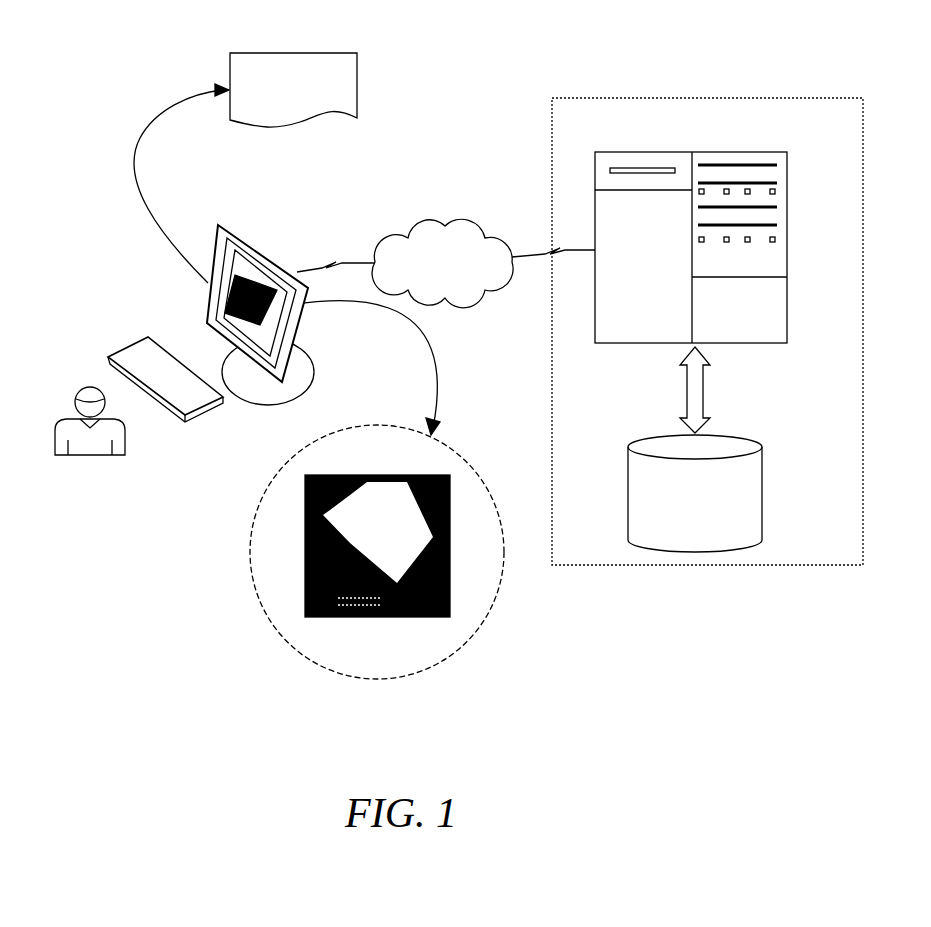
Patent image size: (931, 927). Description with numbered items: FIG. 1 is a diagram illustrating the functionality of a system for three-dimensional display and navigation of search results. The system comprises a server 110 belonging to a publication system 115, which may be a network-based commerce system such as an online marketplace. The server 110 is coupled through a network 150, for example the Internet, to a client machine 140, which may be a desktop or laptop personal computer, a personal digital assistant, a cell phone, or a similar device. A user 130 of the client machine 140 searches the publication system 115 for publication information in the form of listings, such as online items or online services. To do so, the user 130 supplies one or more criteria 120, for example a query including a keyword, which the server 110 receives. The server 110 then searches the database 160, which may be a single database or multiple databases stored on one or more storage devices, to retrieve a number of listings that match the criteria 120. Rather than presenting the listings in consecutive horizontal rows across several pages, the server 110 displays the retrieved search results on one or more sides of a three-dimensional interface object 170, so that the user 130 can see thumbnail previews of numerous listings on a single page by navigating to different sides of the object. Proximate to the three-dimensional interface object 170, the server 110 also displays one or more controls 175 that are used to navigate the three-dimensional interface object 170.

The server 110 is at (762, 152).
The publication system 115 is at (705, 98).
The criteria 120 is at (293, 53).
The user 130 is at (93, 386).
The client machine 140 is at (277, 250).
The network 150 is at (445, 223).
The database 160 is at (762, 490).
The 3-D interface object 170 is at (368, 482).
The controls 175 is at (327, 607).